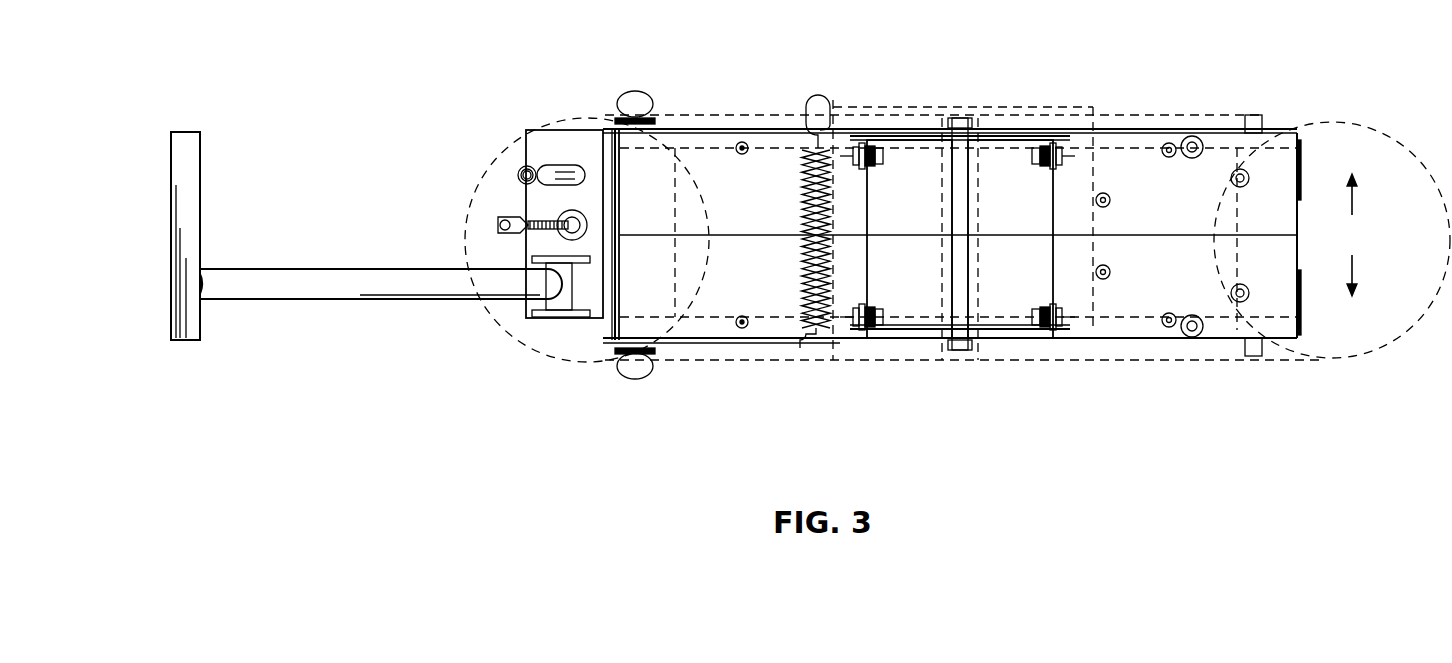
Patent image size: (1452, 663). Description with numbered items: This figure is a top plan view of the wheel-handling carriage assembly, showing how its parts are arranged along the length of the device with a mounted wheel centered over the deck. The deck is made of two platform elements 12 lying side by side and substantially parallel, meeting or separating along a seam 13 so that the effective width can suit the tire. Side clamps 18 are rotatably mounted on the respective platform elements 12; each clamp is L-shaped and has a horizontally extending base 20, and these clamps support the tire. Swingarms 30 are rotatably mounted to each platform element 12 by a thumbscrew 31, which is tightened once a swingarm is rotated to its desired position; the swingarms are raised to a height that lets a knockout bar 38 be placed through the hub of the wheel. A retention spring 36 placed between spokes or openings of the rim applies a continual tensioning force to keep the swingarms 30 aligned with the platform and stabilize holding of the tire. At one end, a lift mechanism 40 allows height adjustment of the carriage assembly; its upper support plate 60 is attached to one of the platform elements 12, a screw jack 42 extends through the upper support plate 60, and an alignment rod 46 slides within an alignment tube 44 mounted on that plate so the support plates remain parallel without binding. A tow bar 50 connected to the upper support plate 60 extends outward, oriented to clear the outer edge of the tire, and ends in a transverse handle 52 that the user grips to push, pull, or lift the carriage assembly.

The platform elements 12 is at (960, 235).
The seam 13 is at (1112, 240).
The side clamps 18 is at (878, 148).
The horizontally extending base 20 is at (960, 237).
The swingarms 30 is at (705, 128).
The thumbscrew 31 is at (640, 92).
The retention spring 36 is at (802, 152).
The knockout bar 38 is at (962, 155).
The lift mechanism 40 is at (512, 306).
The screw jack 42 is at (498, 225).
The alignment tube 44 is at (562, 168).
The alignment rod 46 is at (522, 170).
The tow bar 50 is at (250, 283).
The transverse handle 52 is at (182, 168).
The upper support plate 60 is at (593, 142).